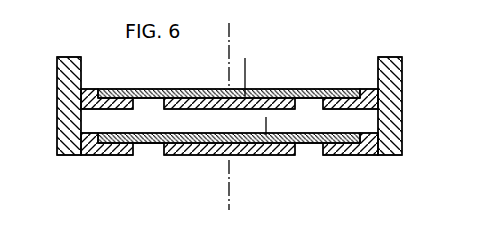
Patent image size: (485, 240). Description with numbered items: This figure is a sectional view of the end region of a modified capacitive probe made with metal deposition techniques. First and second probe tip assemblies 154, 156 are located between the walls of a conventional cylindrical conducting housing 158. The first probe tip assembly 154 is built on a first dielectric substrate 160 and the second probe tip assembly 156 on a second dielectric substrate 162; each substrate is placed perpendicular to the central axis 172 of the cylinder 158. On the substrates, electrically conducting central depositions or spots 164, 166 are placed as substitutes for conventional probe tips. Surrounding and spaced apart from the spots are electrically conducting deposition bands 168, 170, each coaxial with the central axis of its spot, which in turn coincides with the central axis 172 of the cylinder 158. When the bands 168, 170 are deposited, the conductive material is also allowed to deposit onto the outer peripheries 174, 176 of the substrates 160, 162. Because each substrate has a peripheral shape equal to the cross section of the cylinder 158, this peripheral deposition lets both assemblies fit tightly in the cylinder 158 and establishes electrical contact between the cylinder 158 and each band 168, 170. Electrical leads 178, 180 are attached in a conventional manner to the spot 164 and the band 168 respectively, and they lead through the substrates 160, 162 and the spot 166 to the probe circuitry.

The first probe tip assembly 154 is at (207, 167).
The second probe tip assembly 156 is at (270, 84).
The cylindrical conducting housing 158 is at (66, 57).
The first dielectric substrate 160 is at (155, 146).
The second dielectric substrate 162 is at (155, 88).
The electrically conducting central deposition or spot 164 is at (266, 148).
The electrically conducting central deposition or spot 166 is at (267, 102).
The electrically conducting deposition band 168 is at (108, 151).
The electrically conducting deposition band 170 is at (86, 93).
The central axis 172 is at (229, 195).
The outer periphery 174 is at (360, 134).
The outer periphery 176 is at (360, 94).
The electrical lead 178 is at (266, 122).
The electrical lead 180 is at (245, 62).